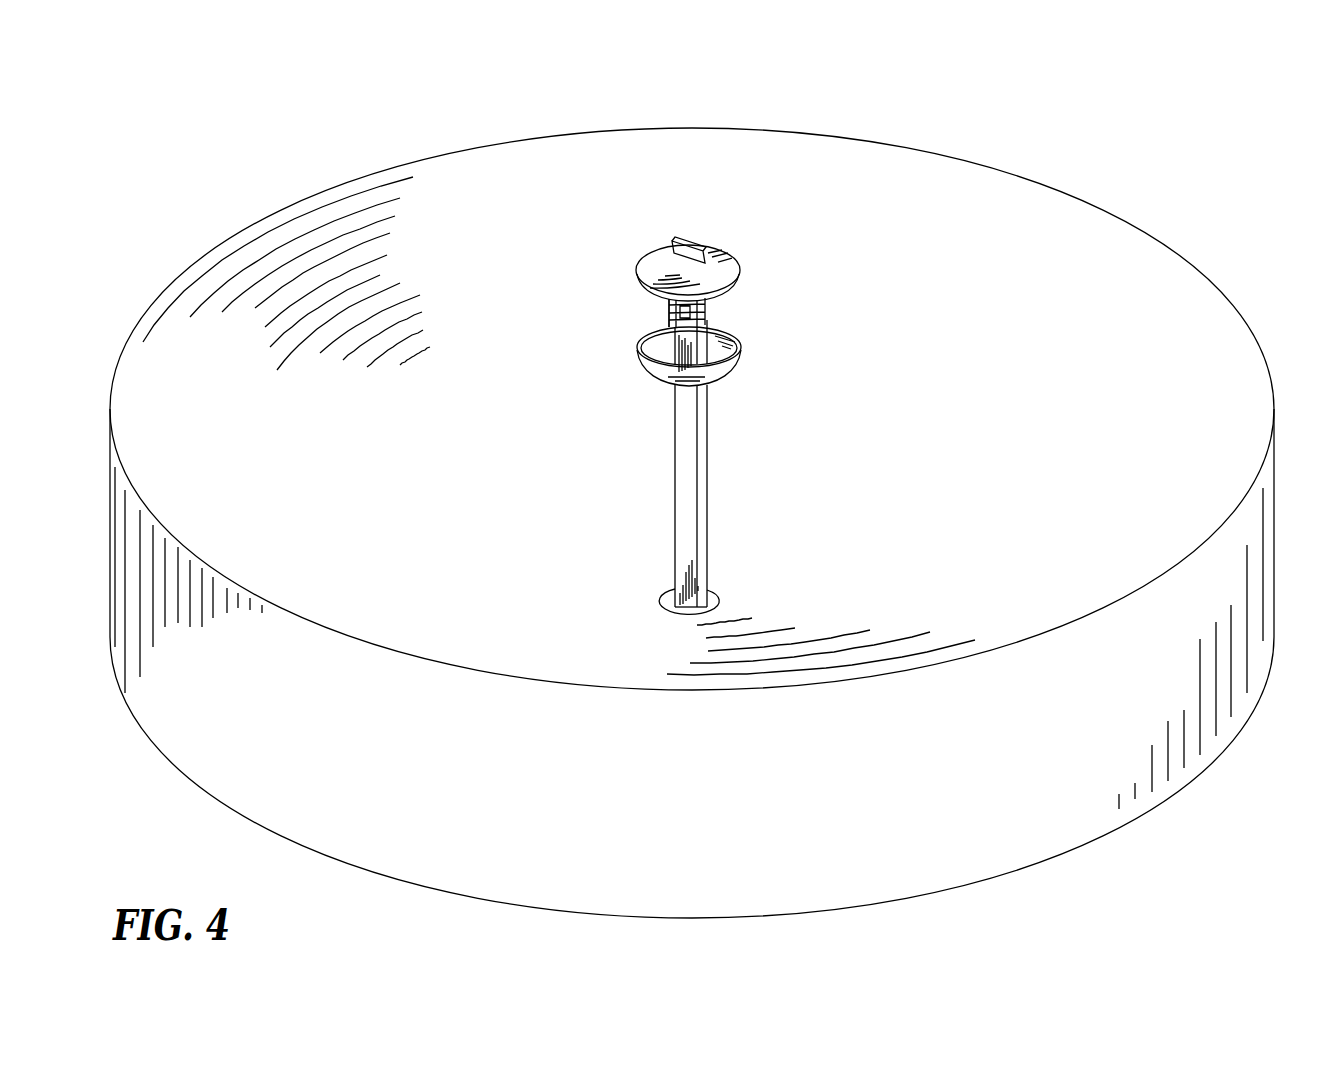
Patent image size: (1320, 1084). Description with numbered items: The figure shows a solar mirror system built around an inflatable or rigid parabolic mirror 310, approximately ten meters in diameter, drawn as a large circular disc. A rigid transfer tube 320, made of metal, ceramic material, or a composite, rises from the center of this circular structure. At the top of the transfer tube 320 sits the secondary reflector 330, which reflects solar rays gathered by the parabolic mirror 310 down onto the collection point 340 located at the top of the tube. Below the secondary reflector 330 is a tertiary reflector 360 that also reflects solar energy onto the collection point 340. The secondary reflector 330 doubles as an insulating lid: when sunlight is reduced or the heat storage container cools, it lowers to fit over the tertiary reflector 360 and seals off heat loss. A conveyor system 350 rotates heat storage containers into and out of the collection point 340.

The parabolic mirror 310 is at (1035, 181).
The transfer tube 320 is at (708, 405).
The secondary reflector 330 is at (665, 247).
The collection point 340 is at (722, 299).
The conveyor system 350 is at (667, 313).
The tertiary reflector 360 is at (650, 366).